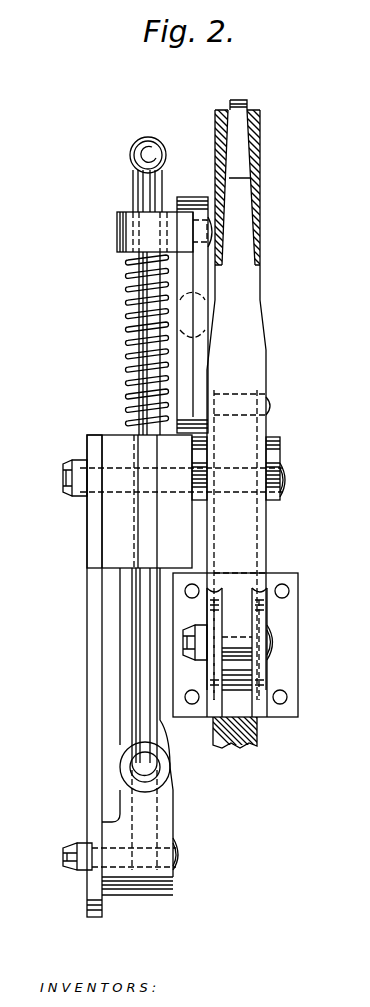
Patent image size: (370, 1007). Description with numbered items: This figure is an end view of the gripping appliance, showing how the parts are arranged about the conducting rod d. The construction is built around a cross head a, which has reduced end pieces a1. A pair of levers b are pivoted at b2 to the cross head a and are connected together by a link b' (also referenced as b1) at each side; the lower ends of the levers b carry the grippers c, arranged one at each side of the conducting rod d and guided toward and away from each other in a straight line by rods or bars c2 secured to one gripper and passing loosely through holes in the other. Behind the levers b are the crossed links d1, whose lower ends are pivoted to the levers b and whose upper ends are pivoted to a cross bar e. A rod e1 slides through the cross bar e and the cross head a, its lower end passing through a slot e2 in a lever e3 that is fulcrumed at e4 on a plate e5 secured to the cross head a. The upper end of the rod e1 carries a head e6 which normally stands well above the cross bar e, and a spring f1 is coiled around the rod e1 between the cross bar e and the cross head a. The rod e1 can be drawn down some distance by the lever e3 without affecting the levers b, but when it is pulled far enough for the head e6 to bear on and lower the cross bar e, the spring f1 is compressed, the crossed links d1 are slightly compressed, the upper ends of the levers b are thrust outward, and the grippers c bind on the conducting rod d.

The cross head a is at (107, 508).
The reduced end pieces a1 is at (143, 533).
The levers b is at (246, 400).
The link b1 is at (200, 460).
The link b' is at (287, 467).
The pivot b2 is at (297, 494).
The grippers c is at (290, 713).
The rods or bars c2 is at (283, 585).
The conducting rod d is at (252, 138).
The crossed links d1 is at (198, 348).
The cross bar e is at (118, 235).
The rod e1 is at (75, 695).
The slot e2 is at (128, 763).
The lever e3 is at (167, 808).
The fulcrum e4 is at (175, 855).
The plate e5 is at (93, 628).
The head e6 is at (132, 158).
The spring f1 is at (116, 310).